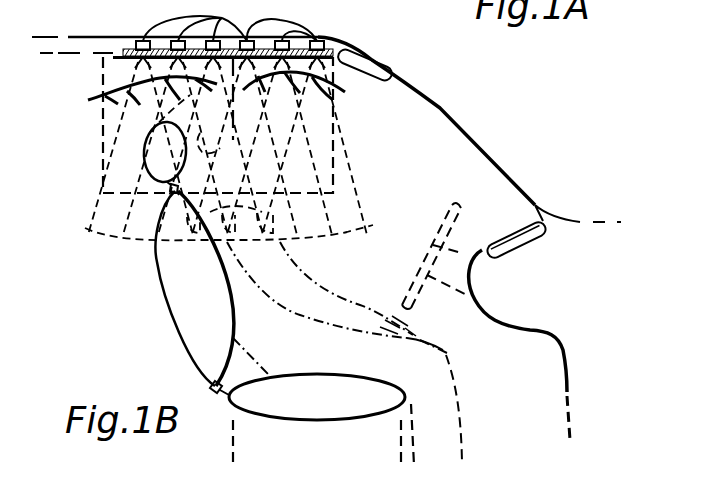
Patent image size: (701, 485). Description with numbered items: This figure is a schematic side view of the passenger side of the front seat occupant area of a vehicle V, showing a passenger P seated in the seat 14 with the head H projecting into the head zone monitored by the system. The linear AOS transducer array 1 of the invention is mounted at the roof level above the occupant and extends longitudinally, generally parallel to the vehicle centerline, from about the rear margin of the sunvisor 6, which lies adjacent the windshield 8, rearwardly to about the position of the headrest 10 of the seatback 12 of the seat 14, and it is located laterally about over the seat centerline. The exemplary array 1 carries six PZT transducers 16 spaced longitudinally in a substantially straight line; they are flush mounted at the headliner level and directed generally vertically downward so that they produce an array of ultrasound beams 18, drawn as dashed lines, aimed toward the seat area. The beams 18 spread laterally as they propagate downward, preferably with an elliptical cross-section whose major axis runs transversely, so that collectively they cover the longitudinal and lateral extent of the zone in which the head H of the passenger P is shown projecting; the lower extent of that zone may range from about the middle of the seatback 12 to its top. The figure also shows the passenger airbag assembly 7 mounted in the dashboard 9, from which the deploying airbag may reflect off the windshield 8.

The linear AOS transducer array 1 is at (326, 28).
The sunvisor 6 is at (371, 66).
The passenger airbag assembly 7 is at (527, 243).
The windshield 8 is at (456, 96).
The dashboard 9 is at (506, 306).
The headrest 10 is at (138, 162).
The seatback 12 is at (204, 308).
The seat 14 is at (328, 412).
The PZT transducers 16 is at (223, 29).
The ultrasound beams 18 is at (217, 93).
The head H is at (237, 107).
The vehicle V is at (497, 153).
The passenger P is at (287, 343).